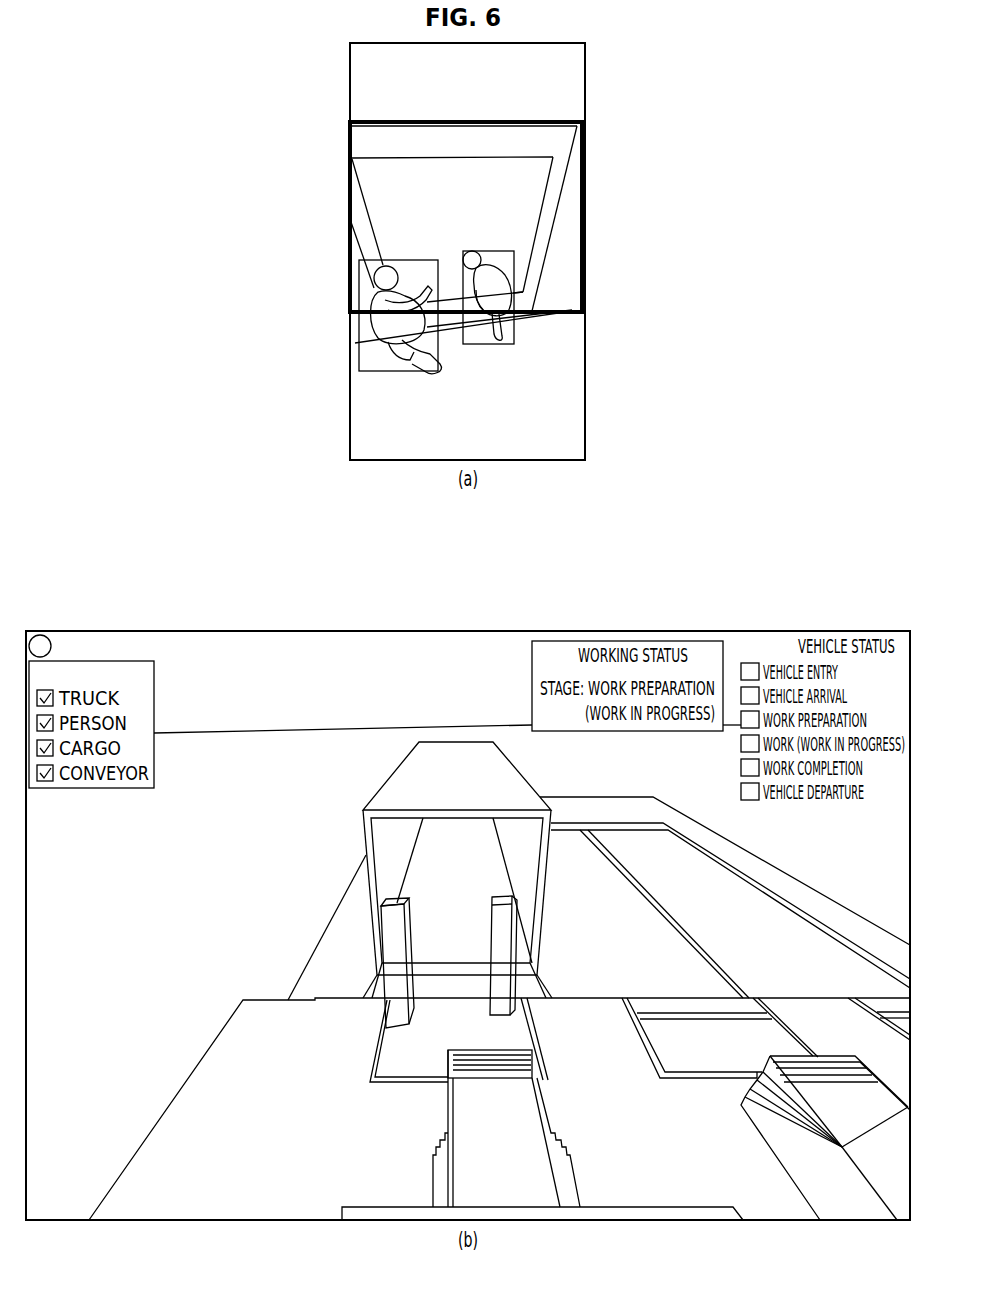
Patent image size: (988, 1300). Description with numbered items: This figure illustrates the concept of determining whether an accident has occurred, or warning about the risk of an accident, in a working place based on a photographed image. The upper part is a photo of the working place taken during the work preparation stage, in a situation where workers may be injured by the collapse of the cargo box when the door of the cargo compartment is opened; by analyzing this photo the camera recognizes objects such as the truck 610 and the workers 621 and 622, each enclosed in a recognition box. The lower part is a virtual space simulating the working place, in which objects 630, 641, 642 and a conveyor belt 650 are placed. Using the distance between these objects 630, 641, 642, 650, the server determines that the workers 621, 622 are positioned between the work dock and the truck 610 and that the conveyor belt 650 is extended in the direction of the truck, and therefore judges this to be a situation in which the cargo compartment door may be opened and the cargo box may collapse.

The truck 610 is at (582, 122).
The worker 621 is at (465, 252).
The worker 622 is at (359, 319).
The object 630 is at (458, 753).
The object 641 is at (397, 903).
The object 642 is at (512, 897).
The conveyor belt 650 is at (532, 1182).